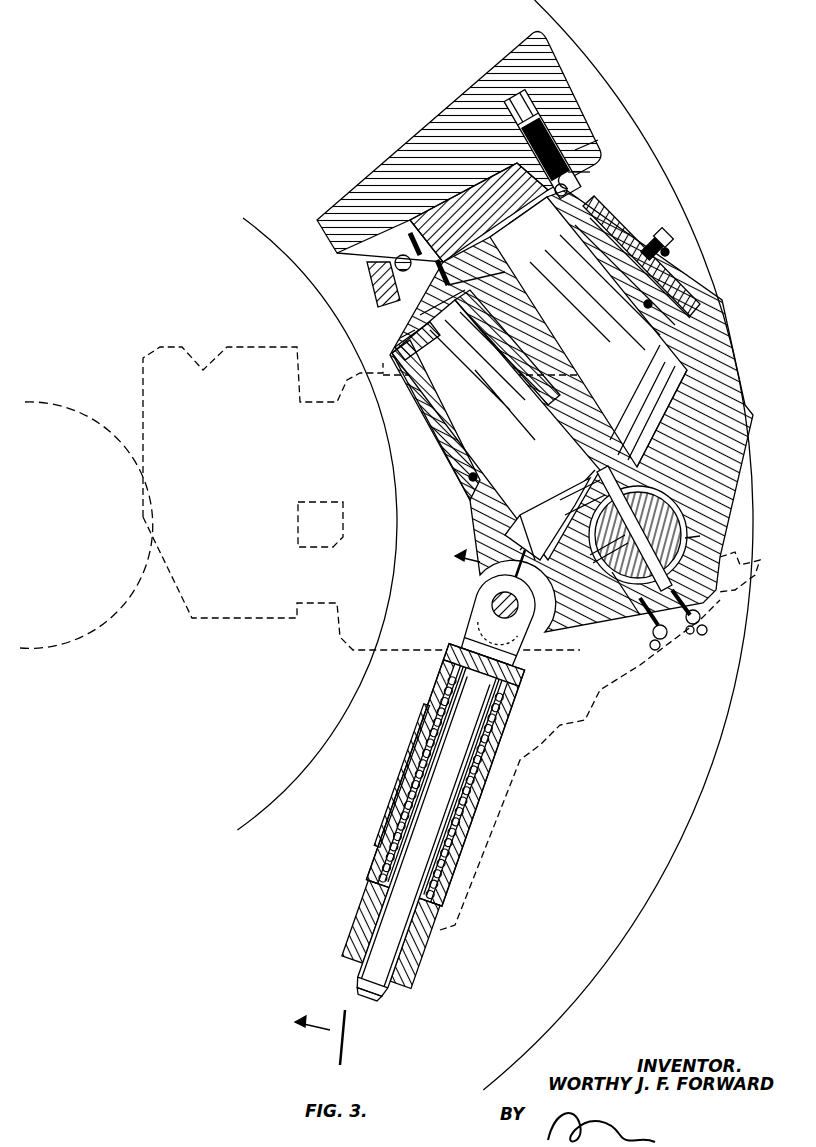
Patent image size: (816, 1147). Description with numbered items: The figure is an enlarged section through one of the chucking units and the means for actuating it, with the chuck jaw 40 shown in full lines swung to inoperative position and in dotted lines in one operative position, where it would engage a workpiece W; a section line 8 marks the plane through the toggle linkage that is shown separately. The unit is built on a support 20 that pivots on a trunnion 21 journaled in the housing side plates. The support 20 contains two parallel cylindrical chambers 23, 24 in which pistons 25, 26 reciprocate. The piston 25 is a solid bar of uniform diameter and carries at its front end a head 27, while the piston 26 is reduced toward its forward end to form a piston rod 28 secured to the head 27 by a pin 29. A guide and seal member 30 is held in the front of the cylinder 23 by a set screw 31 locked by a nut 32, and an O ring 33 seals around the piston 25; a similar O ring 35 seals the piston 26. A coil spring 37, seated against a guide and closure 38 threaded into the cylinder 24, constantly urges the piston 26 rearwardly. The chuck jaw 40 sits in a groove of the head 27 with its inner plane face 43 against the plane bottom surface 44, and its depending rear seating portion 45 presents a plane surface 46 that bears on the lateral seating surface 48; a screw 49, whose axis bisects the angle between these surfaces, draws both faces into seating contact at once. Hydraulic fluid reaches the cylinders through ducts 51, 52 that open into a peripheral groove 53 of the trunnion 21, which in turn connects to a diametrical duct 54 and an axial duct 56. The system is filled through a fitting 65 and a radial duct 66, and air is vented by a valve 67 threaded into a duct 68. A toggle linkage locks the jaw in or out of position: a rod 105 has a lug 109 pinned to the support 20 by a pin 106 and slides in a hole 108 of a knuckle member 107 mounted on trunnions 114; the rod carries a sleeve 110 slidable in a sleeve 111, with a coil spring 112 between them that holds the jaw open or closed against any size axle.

The section line 8- 8 is at (397, 806).
The support 20 is at (700, 365).
The trunnion 21 is at (660, 520).
The cylindrical chamber 23 is at (690, 430).
The cylindrical chamber 24 is at (515, 540).
The piston 25 is at (645, 330).
The piston 26 is at (518, 552).
The head 27 is at (400, 300).
The piston rod 28 is at (418, 316).
The pin 29 is at (457, 259).
The guide and seal member 30 is at (596, 212).
The set screw 31 is at (675, 232).
The nut 32 is at (678, 258).
The O ring 33 is at (652, 302).
The O ring 35 is at (470, 480).
The coil spring 37 is at (470, 415).
The guide and closure 38 is at (398, 346).
The chuck jaw 40 is at (420, 108).
The inner plane face 43 is at (372, 282).
The plane bottom surface 44 is at (395, 263).
The depending rear seating portion 45 is at (600, 137).
The plane surface 46 is at (567, 190).
The lateral seating surface 48 is at (592, 170).
The screw 49 is at (546, 100).
The duct 51 is at (640, 480).
The duct 52 is at (598, 515).
The peripheral groove 53 is at (701, 546).
The duct 54 is at (597, 552).
The duct 56 is at (620, 590).
The fitting 65 is at (700, 612).
The radial duct 66 is at (692, 591).
The valve 67 is at (658, 650).
The duct 68 is at (645, 630).
The rod 105 is at (470, 790).
The pin 106 is at (500, 595).
The knuckle member 107 is at (425, 930).
The hole 108 is at (370, 942).
The lug 109 is at (482, 622).
The sleeve 110 is at (455, 666).
The sleeve 111 is at (400, 795).
The coil spring 112 is at (430, 735).
The trunnions 114 is at (420, 958).
The workpiece W is at (82, 638).